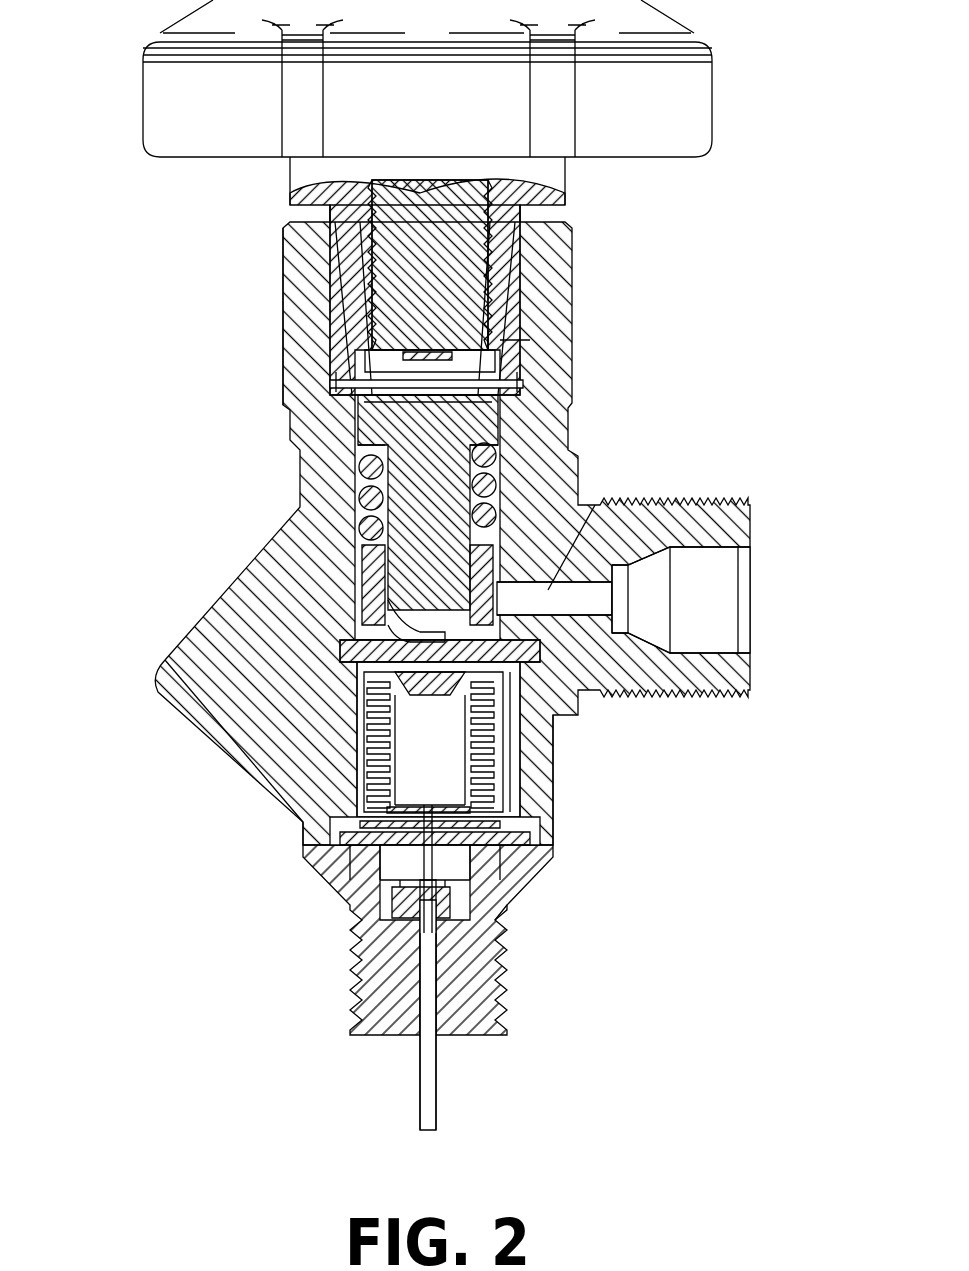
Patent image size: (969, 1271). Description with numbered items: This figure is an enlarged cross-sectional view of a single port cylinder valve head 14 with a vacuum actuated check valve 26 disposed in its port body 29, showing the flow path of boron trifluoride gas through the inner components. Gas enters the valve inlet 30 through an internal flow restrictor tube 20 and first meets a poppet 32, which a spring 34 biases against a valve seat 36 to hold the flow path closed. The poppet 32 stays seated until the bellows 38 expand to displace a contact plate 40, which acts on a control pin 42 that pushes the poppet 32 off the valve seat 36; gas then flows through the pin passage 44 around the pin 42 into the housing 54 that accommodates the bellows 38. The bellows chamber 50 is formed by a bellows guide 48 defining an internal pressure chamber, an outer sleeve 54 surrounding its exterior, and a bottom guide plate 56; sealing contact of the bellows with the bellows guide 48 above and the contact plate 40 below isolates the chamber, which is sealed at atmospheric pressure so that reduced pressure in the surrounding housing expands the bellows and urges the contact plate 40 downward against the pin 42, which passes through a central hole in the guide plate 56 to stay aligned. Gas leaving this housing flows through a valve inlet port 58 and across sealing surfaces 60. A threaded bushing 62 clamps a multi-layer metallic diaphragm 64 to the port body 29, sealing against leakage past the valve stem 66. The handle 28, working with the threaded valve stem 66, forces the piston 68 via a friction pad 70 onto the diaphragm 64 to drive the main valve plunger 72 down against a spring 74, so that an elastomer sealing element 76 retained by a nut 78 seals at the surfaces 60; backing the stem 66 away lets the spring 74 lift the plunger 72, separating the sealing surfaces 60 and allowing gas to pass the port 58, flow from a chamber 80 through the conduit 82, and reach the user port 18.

The single port cylinder valve head 14 is at (218, 450).
The user port 18 is at (712, 545).
The internal flow restrictor tube 20 is at (438, 1070).
The vacuum actuated check valve 26 is at (347, 738).
The handle 28 is at (718, 100).
The port body 29 is at (563, 768).
The valve inlet 30 is at (445, 1020).
The poppet 32 is at (440, 895).
The spring 34 is at (465, 975).
The valve seat 36 is at (440, 875).
The bellows 38 is at (470, 728).
The contact plate 40 is at (515, 868).
The control pin 42 is at (450, 880).
The pin passage 44 is at (420, 880).
The bellows guide 48 is at (440, 662).
The bellows chamber 50 is at (448, 748).
The outer sleeve 54 is at (355, 765).
The bottom guide plate 56 is at (325, 820).
The valve inlet port 58 is at (400, 645).
The sealing surfaces 60 is at (380, 640).
The threaded bushing 62 is at (350, 278).
The multi-layer metallic diaphragm 64 is at (355, 382).
The valve stem 66 is at (448, 246).
The piston 68 is at (500, 352).
The friction pad 70 is at (435, 350).
The main valve plunger 72 is at (448, 440).
The spring 74 is at (545, 470).
The elastomer sealing element 76 is at (400, 600).
The nut 78 is at (360, 598).
The chamber 80 is at (470, 600).
The conduit 82 is at (580, 530).